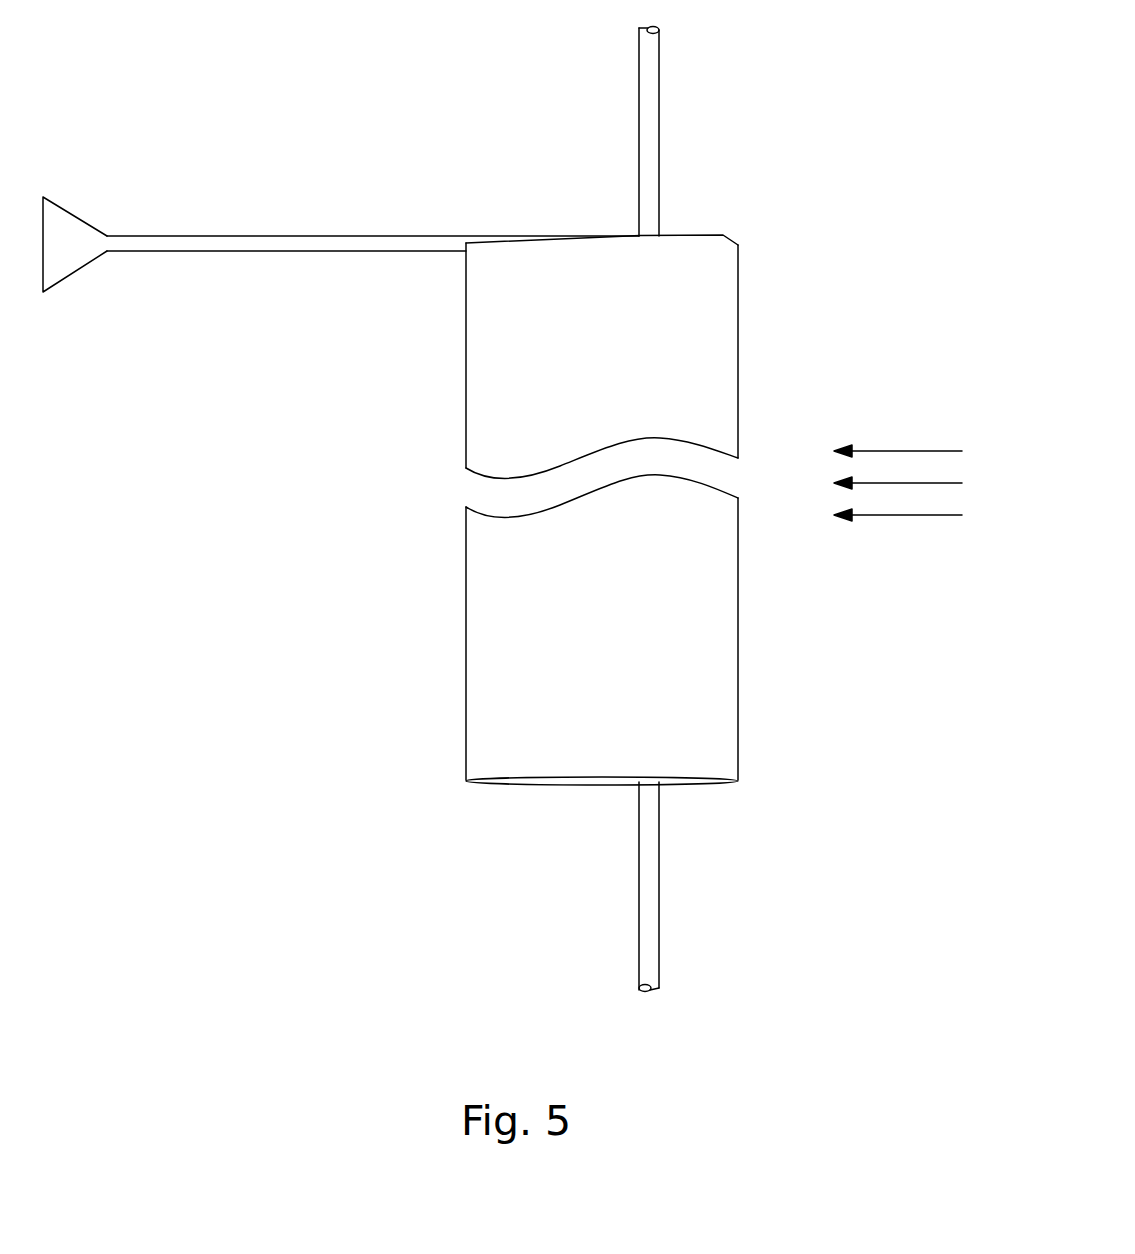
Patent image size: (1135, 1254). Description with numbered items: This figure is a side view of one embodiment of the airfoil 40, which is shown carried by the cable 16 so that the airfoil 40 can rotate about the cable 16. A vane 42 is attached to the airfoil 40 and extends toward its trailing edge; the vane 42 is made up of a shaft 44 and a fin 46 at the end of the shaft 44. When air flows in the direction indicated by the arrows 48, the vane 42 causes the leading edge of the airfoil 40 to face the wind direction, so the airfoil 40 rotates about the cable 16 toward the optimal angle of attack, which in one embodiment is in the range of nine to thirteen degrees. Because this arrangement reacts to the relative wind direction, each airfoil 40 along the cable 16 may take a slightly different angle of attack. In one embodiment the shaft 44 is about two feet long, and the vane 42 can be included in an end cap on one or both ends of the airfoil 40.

The cable 16 is at (659, 148).
The airfoil 40 is at (740, 347).
The vane 42 is at (235, 236).
The shaft 44 is at (337, 244).
The fin 46 is at (50, 220).
The air flow direction 48 is at (892, 517).